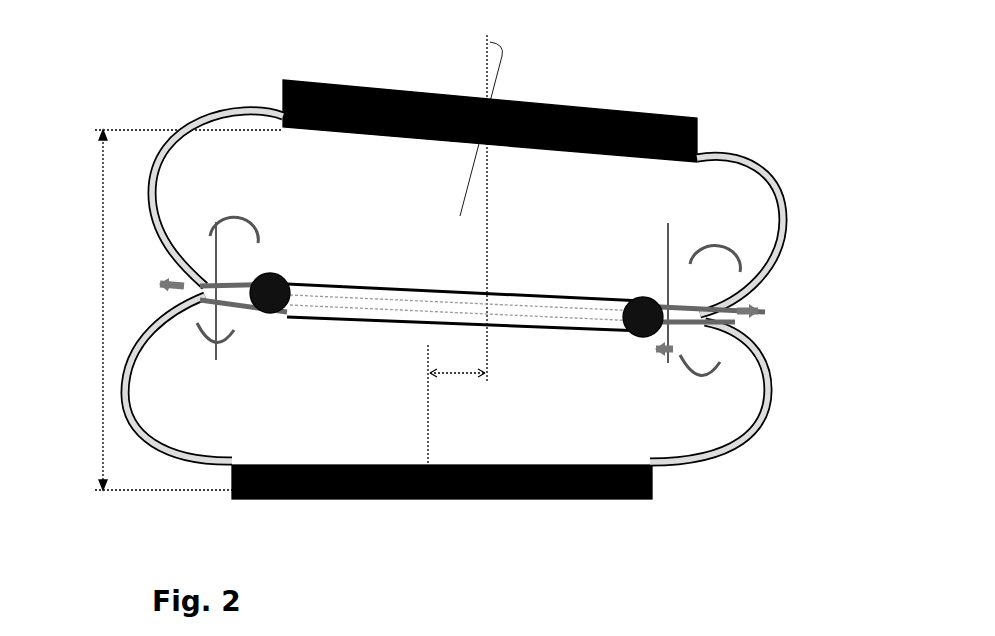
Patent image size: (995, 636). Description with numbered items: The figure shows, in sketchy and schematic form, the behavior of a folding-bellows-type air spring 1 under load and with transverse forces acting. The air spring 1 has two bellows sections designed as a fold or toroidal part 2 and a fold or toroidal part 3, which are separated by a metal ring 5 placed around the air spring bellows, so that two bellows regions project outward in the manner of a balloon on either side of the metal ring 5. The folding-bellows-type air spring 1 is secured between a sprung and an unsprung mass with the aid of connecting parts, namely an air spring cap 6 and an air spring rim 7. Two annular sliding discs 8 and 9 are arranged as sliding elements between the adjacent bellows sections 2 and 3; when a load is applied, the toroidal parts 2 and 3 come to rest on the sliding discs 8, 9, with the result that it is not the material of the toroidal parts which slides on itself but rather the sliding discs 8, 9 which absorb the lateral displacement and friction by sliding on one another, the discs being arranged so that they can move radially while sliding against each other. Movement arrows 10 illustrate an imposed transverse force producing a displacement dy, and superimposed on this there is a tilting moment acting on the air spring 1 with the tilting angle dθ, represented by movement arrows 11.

The folding-bellows-type air spring 1 is at (714, 75).
The fold or toroidal part 2 is at (757, 170).
The fold or toroidal part 3 is at (717, 463).
The metal ring 5 is at (513, 263).
The air spring cap 6 is at (272, 90).
The air spring rim 7 is at (655, 505).
The annular sliding disc 8 is at (200, 271).
The annular sliding disc 9 is at (200, 297).
The movement arrows 10 is at (160, 296).
The movement arrows 11 is at (200, 345).